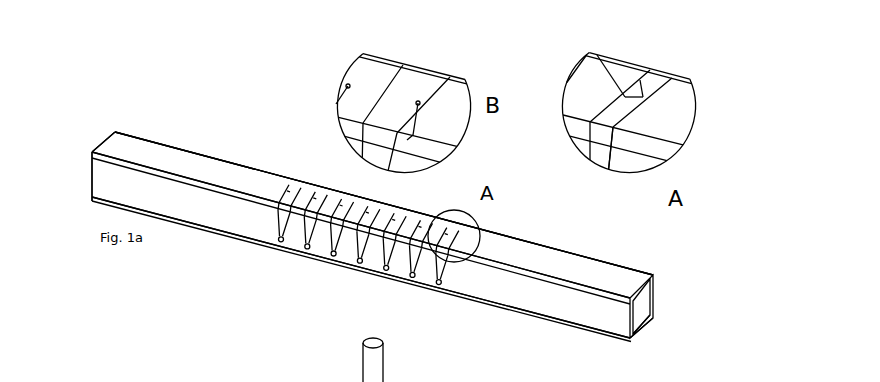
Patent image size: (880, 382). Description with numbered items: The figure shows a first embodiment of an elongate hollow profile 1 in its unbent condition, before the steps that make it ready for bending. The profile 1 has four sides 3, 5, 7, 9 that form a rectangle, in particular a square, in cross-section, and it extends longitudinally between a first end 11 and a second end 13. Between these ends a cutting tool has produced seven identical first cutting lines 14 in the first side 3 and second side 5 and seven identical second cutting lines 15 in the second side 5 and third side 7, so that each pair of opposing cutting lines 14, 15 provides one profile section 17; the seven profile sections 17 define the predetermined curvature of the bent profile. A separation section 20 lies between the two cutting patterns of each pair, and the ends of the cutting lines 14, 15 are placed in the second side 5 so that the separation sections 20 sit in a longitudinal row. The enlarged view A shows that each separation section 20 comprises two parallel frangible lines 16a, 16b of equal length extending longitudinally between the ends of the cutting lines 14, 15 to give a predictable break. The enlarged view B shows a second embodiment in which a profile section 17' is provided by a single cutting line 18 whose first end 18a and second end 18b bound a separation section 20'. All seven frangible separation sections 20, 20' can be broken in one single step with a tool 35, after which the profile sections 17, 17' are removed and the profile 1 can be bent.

The hollow profile 1 is at (244, 105).
The first side 3 is at (108, 182).
The second side 5 is at (152, 155).
The third side 7 is at (642, 305).
The fourth side 9 is at (638, 322).
The first end 11 is at (655, 295).
The second end 13 is at (107, 137).
The first cutting line 14 is at (277, 225).
The second cutting line 15 is at (292, 190).
The frangible line 16a is at (627, 95).
The frangible line 16b is at (643, 97).
The profile section 17 is at (662, 59).
The profile section 17' is at (398, 118).
The cutting line 18 is at (395, 100).
The first end 18a is at (422, 147).
The second end 18b is at (423, 100).
The separation section 20 is at (671, 137).
The separation section 20' is at (400, 66).
The tool 35 is at (377, 375).